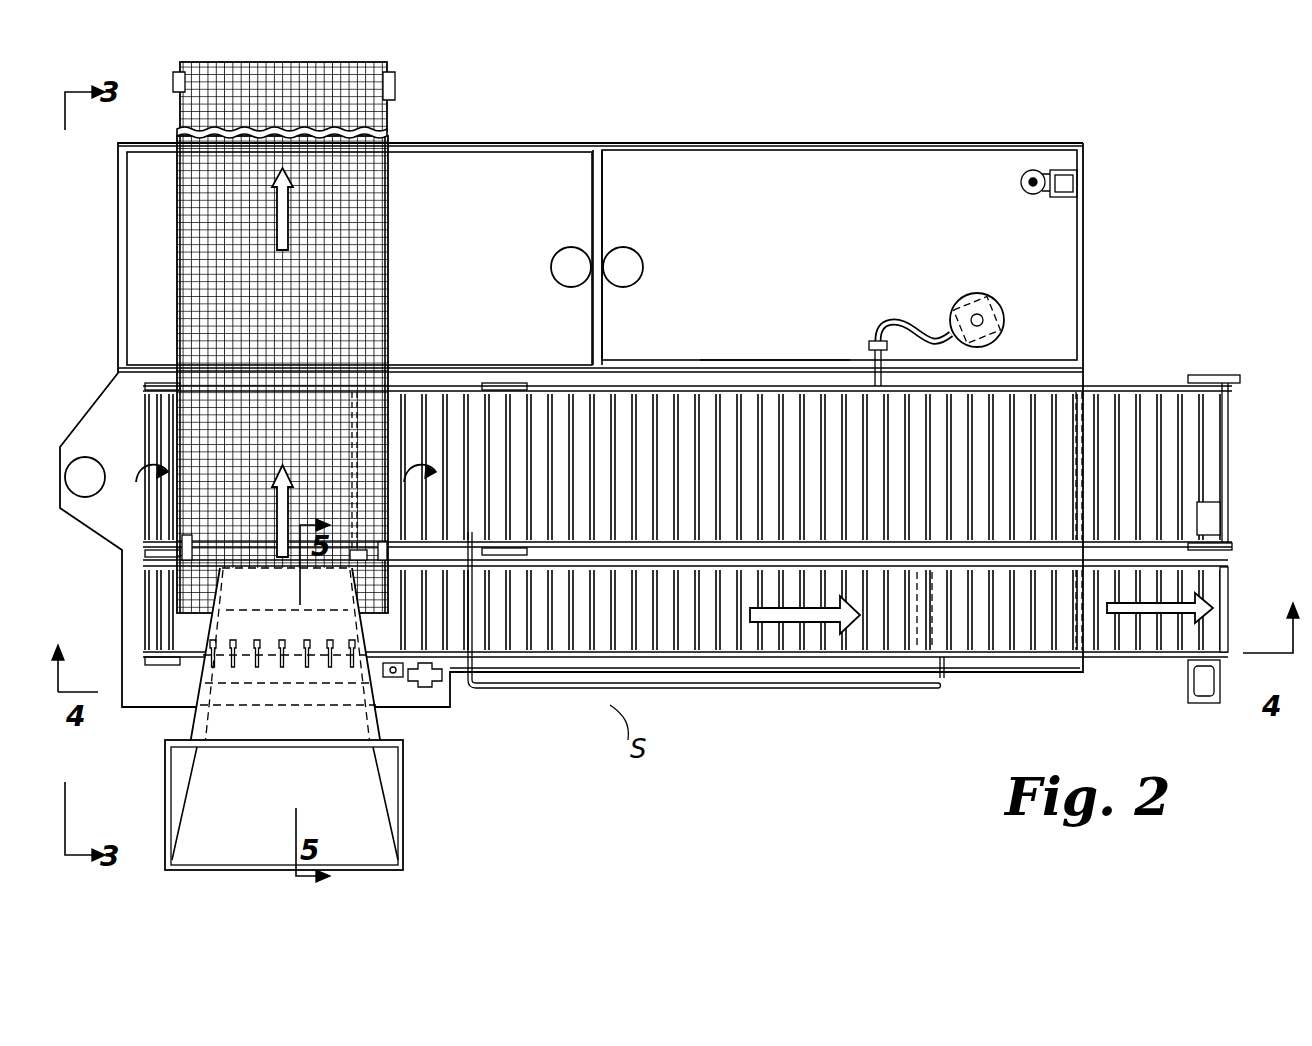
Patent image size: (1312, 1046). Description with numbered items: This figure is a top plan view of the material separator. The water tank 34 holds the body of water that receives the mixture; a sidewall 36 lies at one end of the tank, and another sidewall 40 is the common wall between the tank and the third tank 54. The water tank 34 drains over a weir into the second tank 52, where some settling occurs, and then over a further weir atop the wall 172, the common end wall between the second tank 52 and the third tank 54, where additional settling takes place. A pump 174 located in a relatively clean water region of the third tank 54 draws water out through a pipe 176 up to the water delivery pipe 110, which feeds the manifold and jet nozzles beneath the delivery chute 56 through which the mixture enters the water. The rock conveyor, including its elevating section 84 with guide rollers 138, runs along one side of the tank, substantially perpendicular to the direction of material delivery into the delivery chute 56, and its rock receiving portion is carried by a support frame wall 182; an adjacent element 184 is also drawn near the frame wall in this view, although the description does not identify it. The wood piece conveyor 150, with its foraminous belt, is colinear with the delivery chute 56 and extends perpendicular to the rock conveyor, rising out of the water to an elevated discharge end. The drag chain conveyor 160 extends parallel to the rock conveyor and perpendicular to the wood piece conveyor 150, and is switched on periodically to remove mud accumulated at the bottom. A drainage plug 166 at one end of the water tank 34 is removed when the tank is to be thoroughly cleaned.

The water tank 34 is at (137, 615).
The sidewall 36 is at (117, 566).
The sidewall 40 is at (757, 362).
The second tank 52 is at (498, 163).
The third tank 54 is at (778, 160).
The delivery chute 56 is at (408, 768).
The elevating section of rock conveyor 84 is at (803, 662).
The water delivery pipe 110 is at (420, 690).
The guide rollers 138 is at (468, 366).
The wood piece conveyor 150 is at (393, 276).
The drag chain conveyor 160 is at (655, 400).
The drainage plug 166 is at (88, 460).
The wall 172 is at (609, 207).
The pump 174 is at (974, 294).
The pipe 176 is at (866, 355).
The support frame wall 182 is at (566, 247).
The nozzle 184 is at (643, 266).